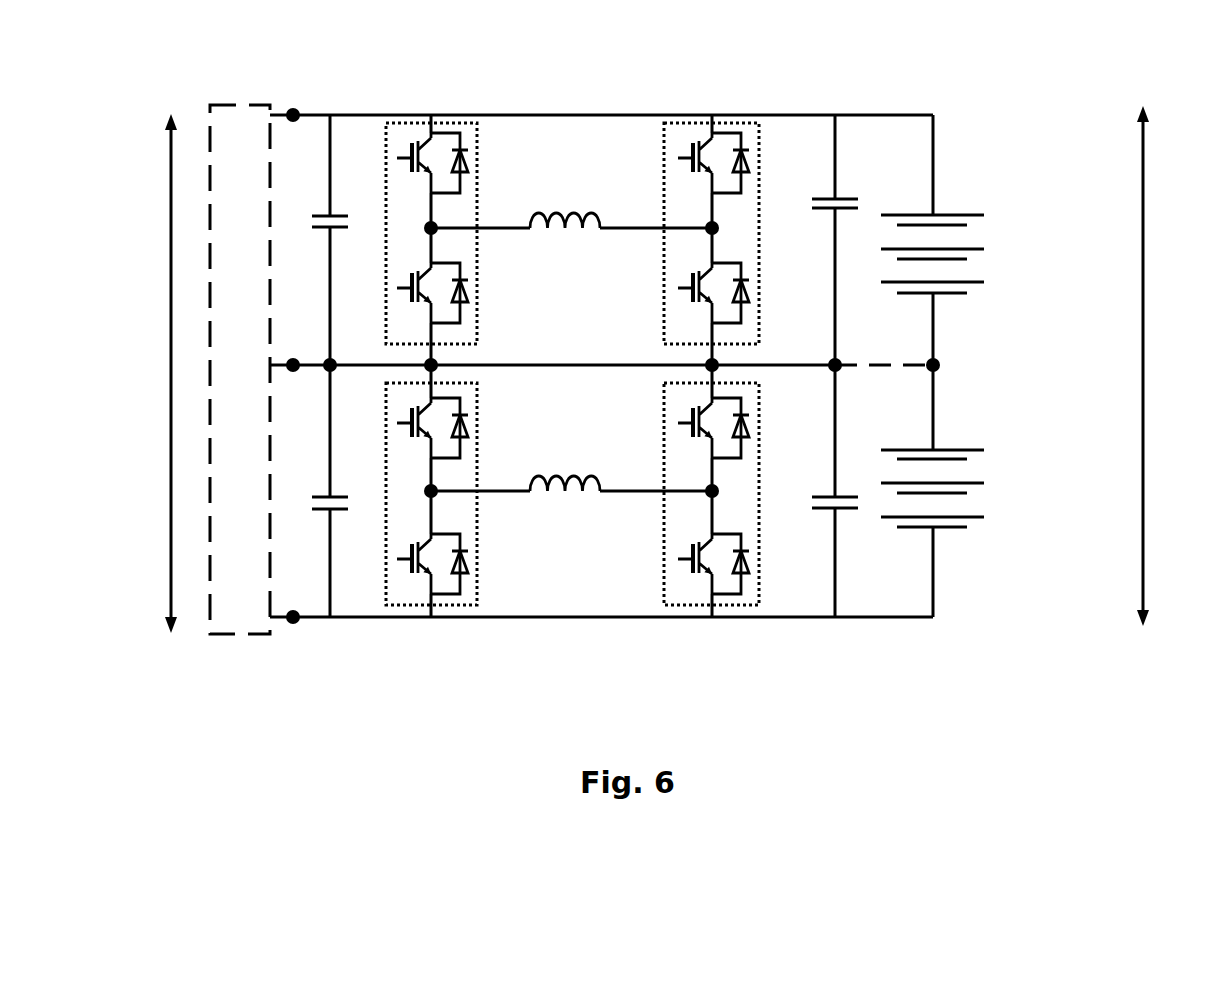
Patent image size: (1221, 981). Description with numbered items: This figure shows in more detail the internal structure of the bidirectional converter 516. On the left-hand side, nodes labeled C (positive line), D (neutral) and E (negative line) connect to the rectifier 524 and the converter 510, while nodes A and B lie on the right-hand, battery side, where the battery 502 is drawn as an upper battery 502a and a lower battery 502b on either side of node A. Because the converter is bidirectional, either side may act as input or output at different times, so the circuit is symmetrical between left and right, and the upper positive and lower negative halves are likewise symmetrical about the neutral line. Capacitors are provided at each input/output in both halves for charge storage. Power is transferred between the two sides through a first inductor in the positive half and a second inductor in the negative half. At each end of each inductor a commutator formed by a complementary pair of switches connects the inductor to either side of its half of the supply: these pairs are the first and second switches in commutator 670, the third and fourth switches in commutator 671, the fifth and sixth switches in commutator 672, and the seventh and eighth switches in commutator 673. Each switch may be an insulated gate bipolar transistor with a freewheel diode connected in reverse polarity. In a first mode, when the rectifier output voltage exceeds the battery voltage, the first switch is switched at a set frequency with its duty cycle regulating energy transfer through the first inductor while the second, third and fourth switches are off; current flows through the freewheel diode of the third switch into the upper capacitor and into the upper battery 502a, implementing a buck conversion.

The bidirectional converter 516 is at (1040, 663).
The converter 510 is at (240, 369).
The rectifier 524 is at (240, 369).
The commutator T1/T2 670 is at (479, 124).
The commutator T3/T4 671 is at (664, 124).
The commutator T5/T6 672 is at (477, 605).
The commutator T7/T8 673 is at (665, 605).
The battery 502 is at (986, 633).
The battery 502a is at (984, 249).
The battery 502b is at (984, 483).